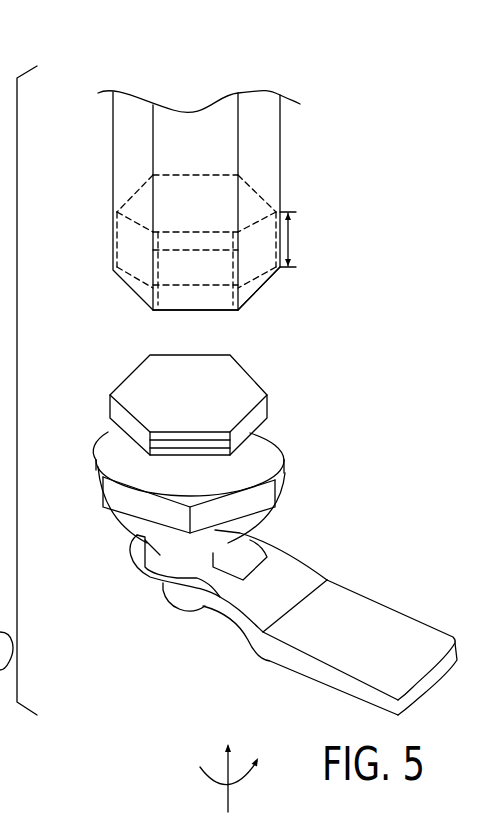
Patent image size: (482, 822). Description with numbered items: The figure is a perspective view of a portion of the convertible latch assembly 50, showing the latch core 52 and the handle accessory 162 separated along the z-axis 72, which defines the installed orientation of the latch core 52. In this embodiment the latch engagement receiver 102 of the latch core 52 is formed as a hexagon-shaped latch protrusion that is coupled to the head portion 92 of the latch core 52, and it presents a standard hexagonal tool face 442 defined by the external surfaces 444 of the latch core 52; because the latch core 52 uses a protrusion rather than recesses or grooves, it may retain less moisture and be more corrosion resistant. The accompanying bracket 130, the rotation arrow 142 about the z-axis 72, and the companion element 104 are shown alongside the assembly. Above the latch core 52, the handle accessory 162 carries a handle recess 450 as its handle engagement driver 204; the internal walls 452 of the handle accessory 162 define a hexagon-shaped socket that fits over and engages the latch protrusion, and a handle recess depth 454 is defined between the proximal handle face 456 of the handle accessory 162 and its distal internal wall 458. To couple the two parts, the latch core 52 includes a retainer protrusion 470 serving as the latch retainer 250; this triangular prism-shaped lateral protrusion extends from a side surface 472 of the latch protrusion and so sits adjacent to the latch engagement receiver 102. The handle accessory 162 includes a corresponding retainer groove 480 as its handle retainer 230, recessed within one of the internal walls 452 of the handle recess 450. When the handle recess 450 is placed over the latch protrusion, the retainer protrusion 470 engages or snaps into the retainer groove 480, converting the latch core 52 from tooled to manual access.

The convertible latch assembly 50 is at (150, 58).
The latch core 52 is at (128, 633).
The z-axis 72 is at (225, 745).
The head portion 92 is at (272, 455).
The latch engagement receiver 102 is at (346, 348).
The fastener 104 is at (249, 535).
The mounting bracket strap 130 is at (295, 672).
The rotation direction arrow 142 is at (250, 790).
The handle accessory 162 is at (223, 68).
The handle engagement driver 204 is at (88, 176).
The handle retainer 230 is at (214, 316).
The latch retainer 250 is at (162, 463).
The hexagonal tool face 442 is at (262, 398).
The external surfaces 444 is at (226, 390).
The handle recess 450 is at (204, 244).
The internal walls 452 is at (134, 259).
The handle recess depth 454 is at (291, 240).
The proximal handle face 456 is at (256, 286).
The distal internal wall 458 is at (256, 191).
The retainer protrusion 470 is at (190, 455).
The side surface 472 is at (170, 435).
The retainer groove 480 is at (234, 310).